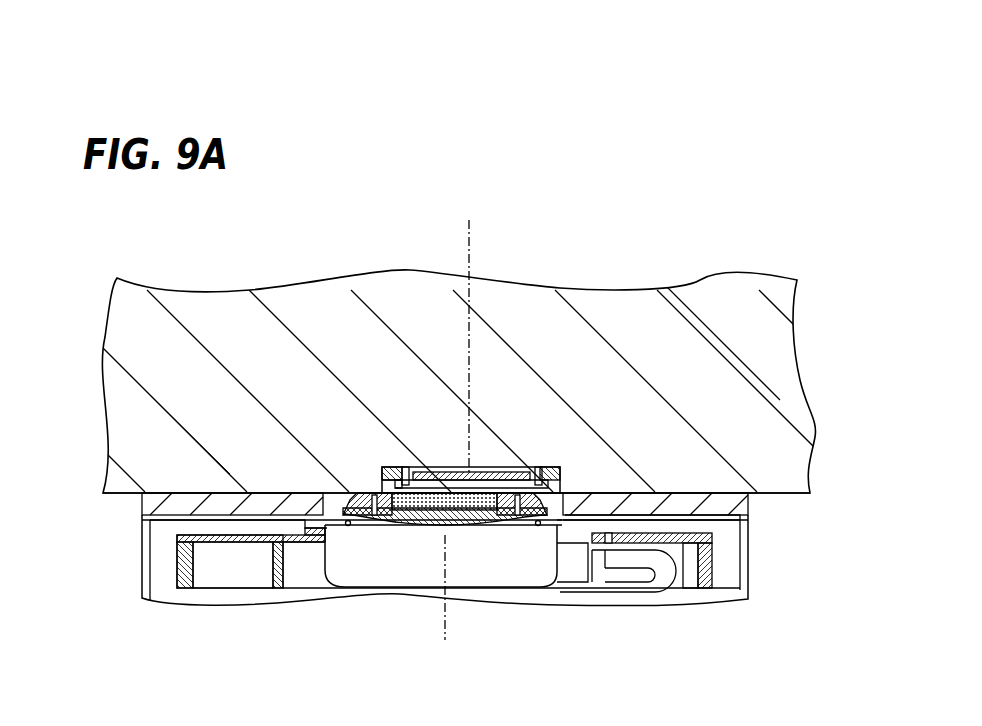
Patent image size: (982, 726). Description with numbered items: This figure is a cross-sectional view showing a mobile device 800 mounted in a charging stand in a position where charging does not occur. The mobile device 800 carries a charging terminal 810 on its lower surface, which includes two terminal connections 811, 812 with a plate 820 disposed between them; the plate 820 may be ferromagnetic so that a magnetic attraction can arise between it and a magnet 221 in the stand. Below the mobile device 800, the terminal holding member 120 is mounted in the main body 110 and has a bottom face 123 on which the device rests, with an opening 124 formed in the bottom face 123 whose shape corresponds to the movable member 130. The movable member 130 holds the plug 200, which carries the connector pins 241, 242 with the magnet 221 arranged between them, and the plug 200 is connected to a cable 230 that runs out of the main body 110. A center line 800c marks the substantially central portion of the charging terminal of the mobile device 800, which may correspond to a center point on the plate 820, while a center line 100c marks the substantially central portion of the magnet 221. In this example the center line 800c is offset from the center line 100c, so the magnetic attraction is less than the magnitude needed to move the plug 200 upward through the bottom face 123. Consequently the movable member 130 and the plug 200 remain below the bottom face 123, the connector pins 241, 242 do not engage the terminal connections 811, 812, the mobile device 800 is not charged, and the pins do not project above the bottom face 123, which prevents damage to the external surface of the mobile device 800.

The mobile device 800 is at (553, 292).
The center line 800c is at (470, 281).
The charging terminal 810 is at (563, 467).
The terminal connection 811 is at (383, 467).
The terminal connection 812 is at (538, 480).
The plate 820 is at (425, 468).
The terminal holding member 120 is at (142, 502).
The bottom face 123 is at (187, 492).
The opening 124 is at (282, 492).
The main body 110 is at (750, 527).
The movable member 130 is at (713, 557).
The plug 200 is at (493, 570).
The magnet 221 is at (430, 528).
The connector pin 241 is at (361, 528).
The connector pin 242 is at (527, 528).
The cable 230 is at (677, 583).
The center line 100c is at (445, 625).